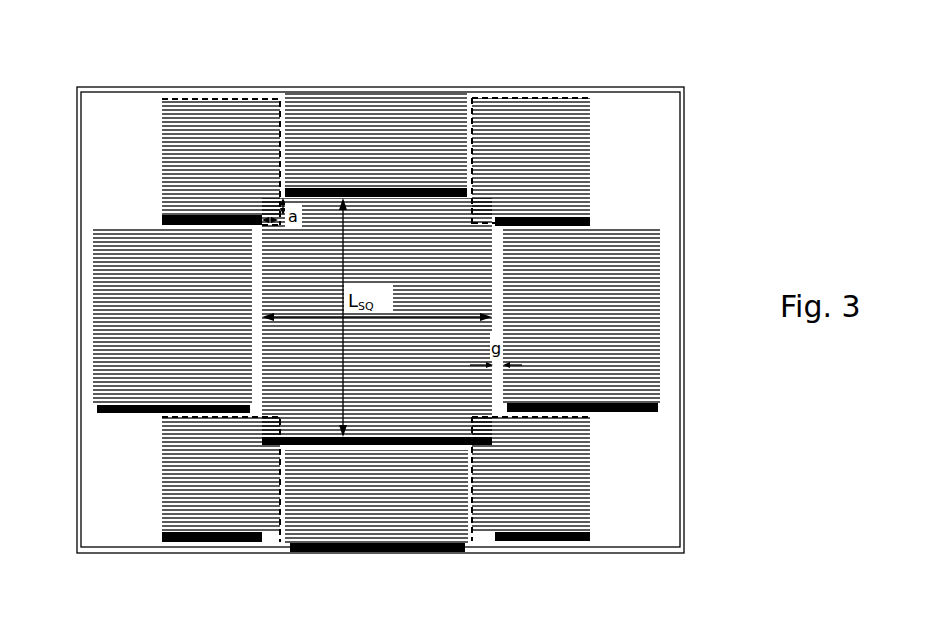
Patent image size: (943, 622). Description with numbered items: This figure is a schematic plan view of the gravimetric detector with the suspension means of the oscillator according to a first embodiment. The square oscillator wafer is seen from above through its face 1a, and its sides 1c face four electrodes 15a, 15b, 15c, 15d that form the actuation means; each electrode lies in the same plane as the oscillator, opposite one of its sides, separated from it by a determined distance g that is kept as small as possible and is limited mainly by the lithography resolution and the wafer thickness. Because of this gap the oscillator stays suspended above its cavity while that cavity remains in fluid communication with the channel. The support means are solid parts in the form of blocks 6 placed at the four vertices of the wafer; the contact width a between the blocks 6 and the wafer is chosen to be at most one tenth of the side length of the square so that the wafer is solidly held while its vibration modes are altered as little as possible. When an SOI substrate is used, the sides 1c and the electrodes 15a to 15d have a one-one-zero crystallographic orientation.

The face of the oscillator 1a is at (418, 287).
The sides of the wafer 1c is at (438, 420).
The electrode 15a is at (637, 315).
The electrode 15b is at (378, 465).
The electrode 15c is at (142, 353).
The electrode 15d is at (340, 127).
The block 6 is at (545, 459).